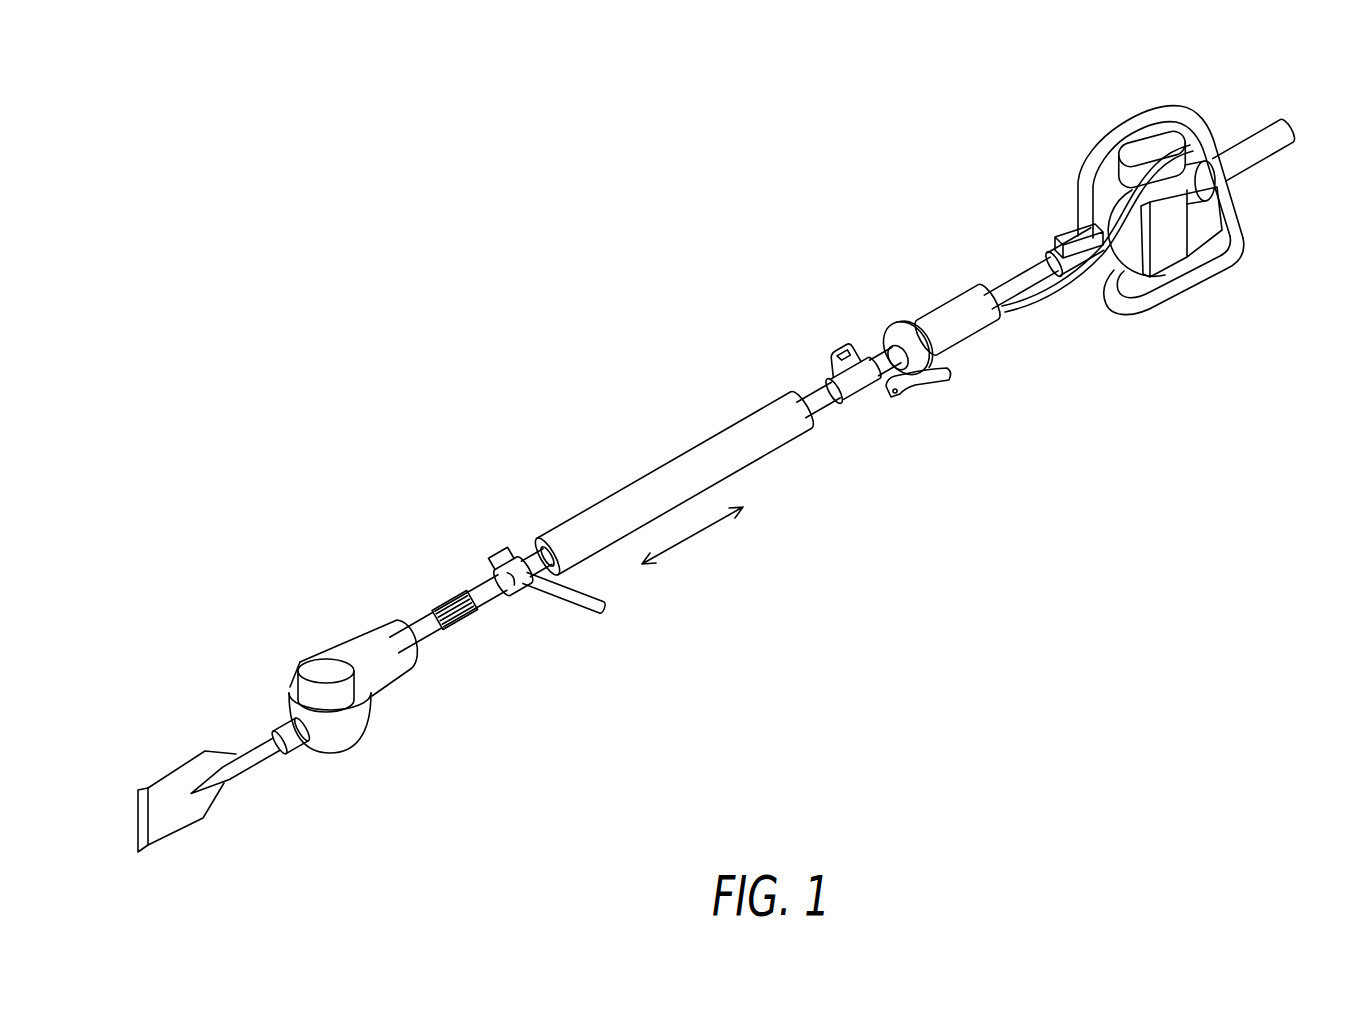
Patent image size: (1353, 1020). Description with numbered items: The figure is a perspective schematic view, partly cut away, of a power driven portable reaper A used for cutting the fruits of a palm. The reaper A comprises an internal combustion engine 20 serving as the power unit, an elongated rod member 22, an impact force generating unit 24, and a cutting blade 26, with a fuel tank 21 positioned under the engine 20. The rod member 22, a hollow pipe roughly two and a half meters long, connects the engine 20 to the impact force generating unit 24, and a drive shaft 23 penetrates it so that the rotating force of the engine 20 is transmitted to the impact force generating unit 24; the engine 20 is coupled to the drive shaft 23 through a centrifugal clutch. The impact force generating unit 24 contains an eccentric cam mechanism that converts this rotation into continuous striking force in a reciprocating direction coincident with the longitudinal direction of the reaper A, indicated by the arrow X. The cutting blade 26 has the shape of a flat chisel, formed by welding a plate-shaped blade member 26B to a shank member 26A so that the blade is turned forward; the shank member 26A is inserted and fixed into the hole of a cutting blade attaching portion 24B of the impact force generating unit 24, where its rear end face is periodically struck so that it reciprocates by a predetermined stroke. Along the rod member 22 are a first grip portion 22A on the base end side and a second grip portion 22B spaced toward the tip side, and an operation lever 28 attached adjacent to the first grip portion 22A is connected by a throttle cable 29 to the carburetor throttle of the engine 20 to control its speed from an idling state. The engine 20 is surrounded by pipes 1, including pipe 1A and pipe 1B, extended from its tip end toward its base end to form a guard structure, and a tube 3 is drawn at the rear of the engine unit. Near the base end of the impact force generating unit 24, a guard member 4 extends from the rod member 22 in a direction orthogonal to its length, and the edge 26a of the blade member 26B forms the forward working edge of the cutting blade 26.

The pipes 1 is at (1114, 221).
The pipe 1A is at (1131, 133).
The pipe 1B is at (1218, 258).
The drive tube 3 is at (1235, 141).
The guard member 4 is at (577, 600).
The internal combustion engine 20 is at (1113, 188).
The fuel tank 21 is at (1148, 276).
The rod member 22 is at (822, 402).
The first grip portion 22A is at (938, 325).
The second grip portion 22B is at (585, 528).
The drive shaft 23 is at (448, 607).
The impact force generating unit 24 is at (347, 733).
The cutting blade attaching portion 24B is at (277, 727).
The cutting blade 26 is at (253, 799).
The shank member 26A is at (258, 752).
The plate-shaped blade member 26B is at (180, 820).
The blade edge 26a is at (142, 848).
The operation lever 28 is at (930, 382).
The throttle cable 29 is at (1048, 297).
The power driven portable reaper A is at (668, 401).
The arrow X is at (695, 533).